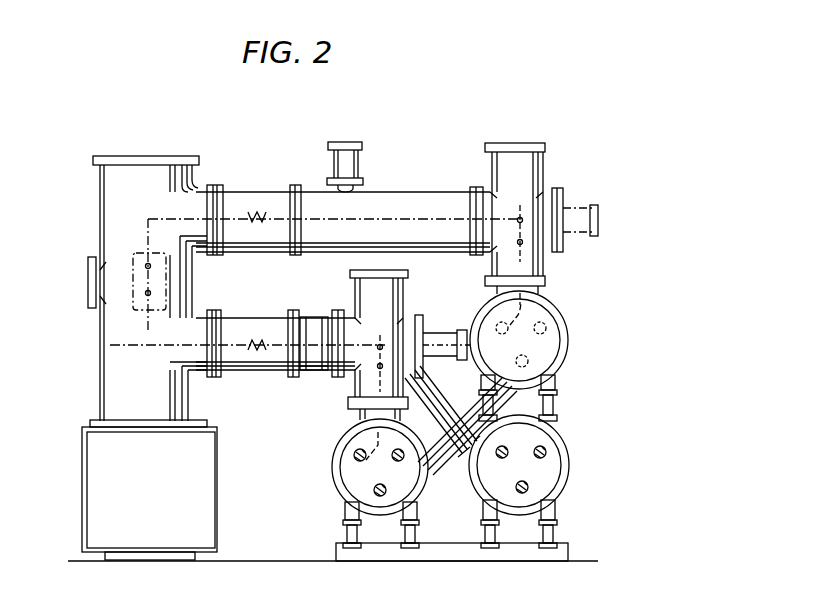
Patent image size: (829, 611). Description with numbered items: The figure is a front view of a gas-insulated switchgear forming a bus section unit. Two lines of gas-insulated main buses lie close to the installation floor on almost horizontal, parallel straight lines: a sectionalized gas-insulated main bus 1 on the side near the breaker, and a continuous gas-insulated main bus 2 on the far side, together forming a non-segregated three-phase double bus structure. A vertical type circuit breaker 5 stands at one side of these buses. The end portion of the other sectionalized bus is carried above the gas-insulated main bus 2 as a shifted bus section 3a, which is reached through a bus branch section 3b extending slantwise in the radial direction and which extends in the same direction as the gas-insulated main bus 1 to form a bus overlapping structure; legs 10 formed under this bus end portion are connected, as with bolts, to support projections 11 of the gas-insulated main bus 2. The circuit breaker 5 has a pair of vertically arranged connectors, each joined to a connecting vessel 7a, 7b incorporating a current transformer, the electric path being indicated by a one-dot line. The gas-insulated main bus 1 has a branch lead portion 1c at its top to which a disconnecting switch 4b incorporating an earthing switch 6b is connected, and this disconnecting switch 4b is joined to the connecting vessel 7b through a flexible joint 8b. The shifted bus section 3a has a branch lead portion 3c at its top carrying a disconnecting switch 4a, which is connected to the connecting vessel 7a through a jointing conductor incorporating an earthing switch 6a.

The gas-insulated main bus 1 is at (335, 485).
The branch lead portion 1c is at (372, 415).
The gas-insulated main bus 2 is at (569, 453).
The shifted bus section 3a is at (566, 318).
The bus branch section 3b is at (440, 466).
The branch lead portion 3c is at (540, 299).
The disconnecting switch 4a is at (541, 173).
The disconnecting switch 4b is at (405, 306).
The circuit breaker 5 is at (100, 248).
The earthing switch 6a is at (362, 146).
The earthing switch 6b is at (440, 333).
The connecting vessel 7a is at (258, 192).
The connecting vessel 7b is at (278, 318).
The flexible joint 8b is at (312, 373).
The leg 10 is at (557, 390).
The support projection 11 is at (557, 413).